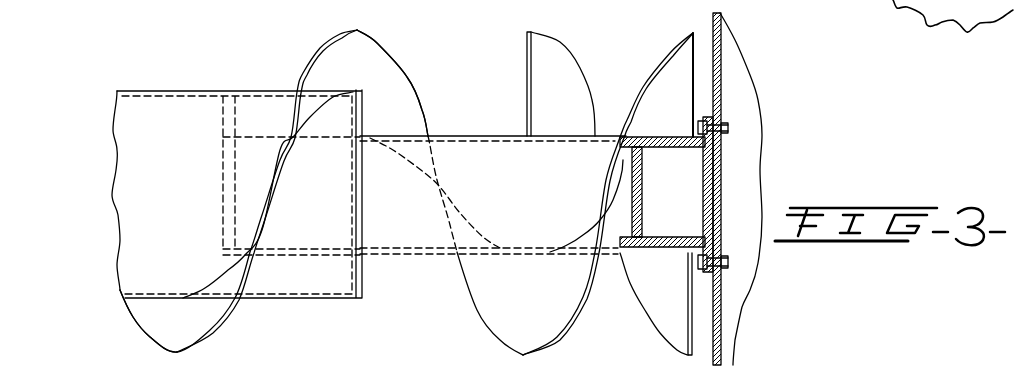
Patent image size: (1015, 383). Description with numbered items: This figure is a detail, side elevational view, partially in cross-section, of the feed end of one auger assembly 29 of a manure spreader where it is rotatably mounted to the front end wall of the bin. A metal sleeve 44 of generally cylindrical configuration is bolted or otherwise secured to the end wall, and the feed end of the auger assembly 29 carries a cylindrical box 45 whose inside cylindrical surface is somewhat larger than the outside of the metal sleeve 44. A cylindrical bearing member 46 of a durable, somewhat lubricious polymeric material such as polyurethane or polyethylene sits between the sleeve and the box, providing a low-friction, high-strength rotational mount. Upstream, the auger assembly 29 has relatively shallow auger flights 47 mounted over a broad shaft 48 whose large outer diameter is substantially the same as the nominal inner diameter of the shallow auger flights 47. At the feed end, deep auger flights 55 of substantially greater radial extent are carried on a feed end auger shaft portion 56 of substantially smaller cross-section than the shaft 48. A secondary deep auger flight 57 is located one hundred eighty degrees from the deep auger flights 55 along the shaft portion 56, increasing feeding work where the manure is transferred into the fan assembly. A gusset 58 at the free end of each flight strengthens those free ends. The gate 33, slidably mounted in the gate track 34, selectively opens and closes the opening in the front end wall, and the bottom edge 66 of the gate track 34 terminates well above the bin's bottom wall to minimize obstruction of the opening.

The auger assembly 29 is at (291, 71).
The gate 33 is at (713, 247).
The gate track 34 is at (721, 90).
The metal sleeve 44 is at (707, 187).
The cylindrical box 45 is at (637, 230).
The cylindrical bearing member 46 is at (708, 143).
The shallow auger flights 47 is at (150, 323).
The shaft 48 is at (163, 92).
The deep auger flights 55 is at (420, 107).
The feed end auger shaft portion 56 is at (538, 187).
The secondary deep auger flight 57 is at (578, 98).
The gusset 58 is at (527, 58).
The bottom edge 66 is at (717, 290).